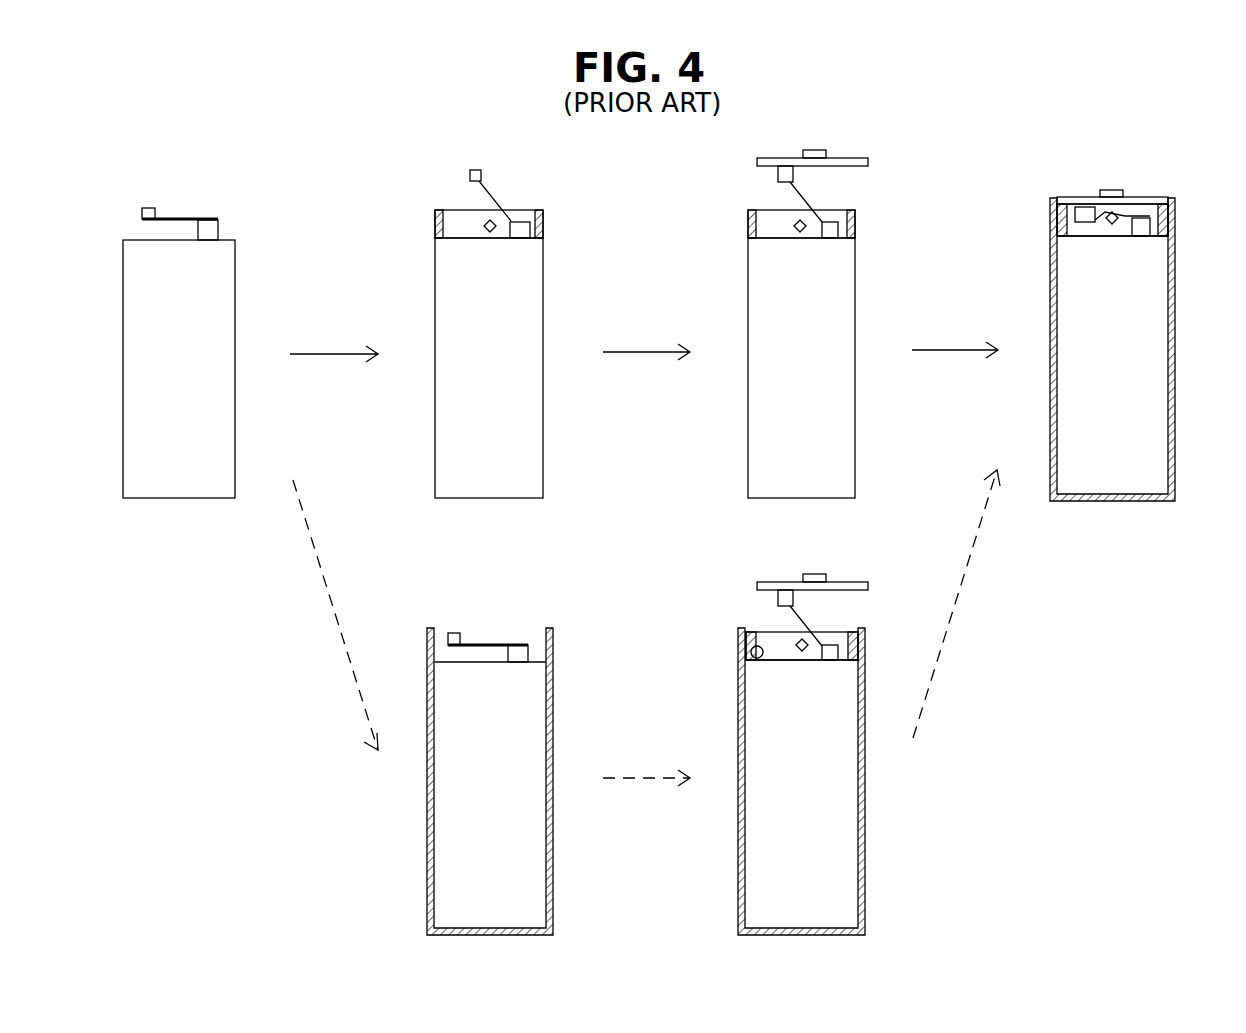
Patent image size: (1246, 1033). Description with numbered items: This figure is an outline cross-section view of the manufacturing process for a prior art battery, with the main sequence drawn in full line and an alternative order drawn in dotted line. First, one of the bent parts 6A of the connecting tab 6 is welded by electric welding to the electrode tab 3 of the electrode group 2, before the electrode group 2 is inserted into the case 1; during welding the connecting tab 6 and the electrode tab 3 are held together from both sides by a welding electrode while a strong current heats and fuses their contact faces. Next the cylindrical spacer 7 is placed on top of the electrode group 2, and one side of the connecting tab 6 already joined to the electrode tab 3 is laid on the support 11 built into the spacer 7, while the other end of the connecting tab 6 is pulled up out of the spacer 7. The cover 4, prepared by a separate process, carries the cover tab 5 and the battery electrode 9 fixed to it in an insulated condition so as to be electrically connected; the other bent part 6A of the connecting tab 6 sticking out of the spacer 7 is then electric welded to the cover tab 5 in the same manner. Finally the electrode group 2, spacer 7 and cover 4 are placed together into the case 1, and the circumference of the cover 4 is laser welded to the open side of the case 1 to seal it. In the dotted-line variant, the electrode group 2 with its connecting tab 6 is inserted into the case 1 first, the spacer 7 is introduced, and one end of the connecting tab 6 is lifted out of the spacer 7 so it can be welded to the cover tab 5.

The case 1 is at (1177, 283).
The electrode group 2 is at (192, 427).
The electrode tab 3 is at (218, 228).
The cover 4 is at (862, 168).
The cover tab 5 is at (778, 172).
The connecting tab 6 is at (190, 218).
The bent part 6A is at (160, 201).
The spacer 7 is at (545, 218).
The battery electrode 9 is at (815, 152).
The support 11 is at (485, 230).